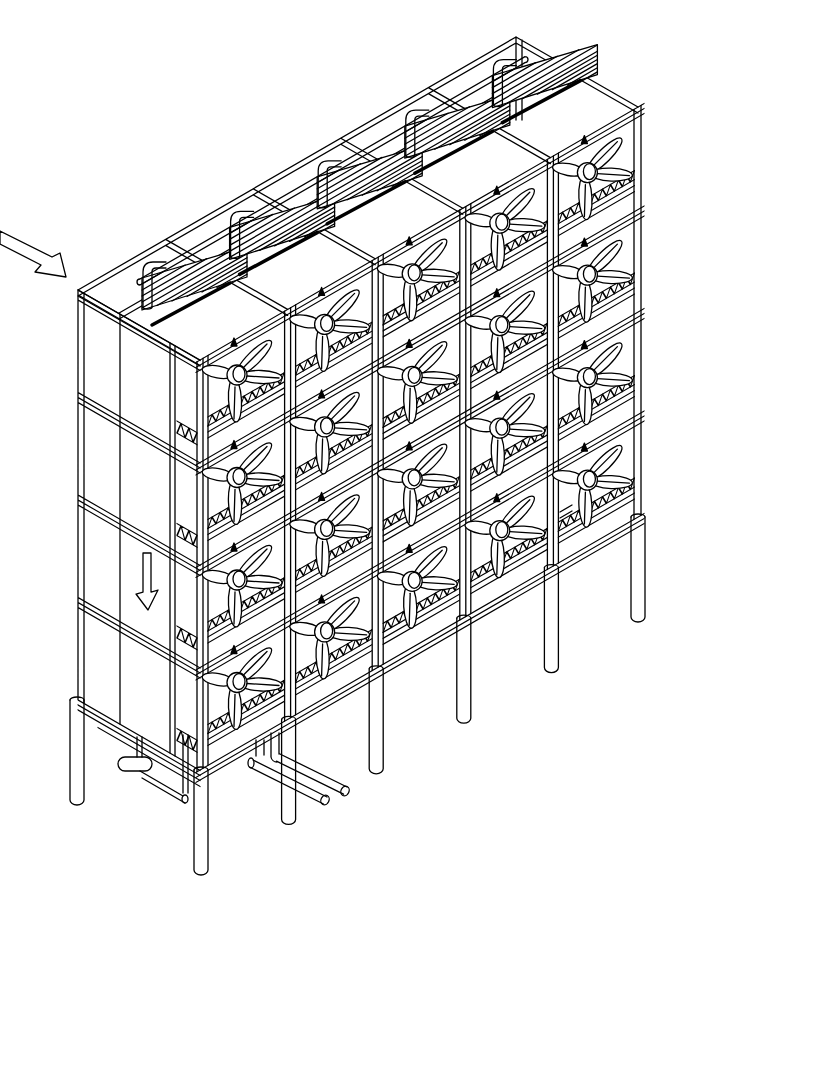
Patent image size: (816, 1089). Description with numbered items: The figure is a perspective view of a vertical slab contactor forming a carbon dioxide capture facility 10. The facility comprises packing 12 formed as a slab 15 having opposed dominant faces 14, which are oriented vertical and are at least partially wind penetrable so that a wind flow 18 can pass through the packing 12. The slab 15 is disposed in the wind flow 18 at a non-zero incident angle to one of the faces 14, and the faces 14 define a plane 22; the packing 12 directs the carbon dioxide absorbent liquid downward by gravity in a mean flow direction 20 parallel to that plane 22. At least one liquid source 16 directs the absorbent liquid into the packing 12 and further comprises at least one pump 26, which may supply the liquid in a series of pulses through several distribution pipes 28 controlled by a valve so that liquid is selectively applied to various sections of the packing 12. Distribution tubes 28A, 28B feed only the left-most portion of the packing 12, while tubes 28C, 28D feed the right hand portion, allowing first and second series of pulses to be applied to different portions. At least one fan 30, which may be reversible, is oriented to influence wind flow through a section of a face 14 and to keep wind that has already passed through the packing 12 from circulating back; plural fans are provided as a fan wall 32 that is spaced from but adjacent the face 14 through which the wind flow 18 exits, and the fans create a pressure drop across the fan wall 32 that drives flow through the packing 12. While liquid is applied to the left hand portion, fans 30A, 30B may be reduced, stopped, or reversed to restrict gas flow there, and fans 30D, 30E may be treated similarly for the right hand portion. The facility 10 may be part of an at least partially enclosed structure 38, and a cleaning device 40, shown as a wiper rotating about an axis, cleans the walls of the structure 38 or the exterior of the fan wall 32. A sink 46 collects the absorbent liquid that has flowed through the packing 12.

The carbon dioxide capture facility 10 is at (90, 44).
The packing 12 is at (130, 638).
The opposed dominant faces 14 is at (120, 338).
The slab 15 is at (177, 467).
The liquid source 16 is at (328, 801).
The wind flow 18 is at (3, 231).
The mean flow direction 20 is at (133, 585).
The plane 22 is at (183, 680).
The pump 26 is at (112, 772).
The distribution pipes 28 is at (512, 66).
The distribution tube 28A is at (165, 266).
The distribution tube 28B is at (258, 214).
The distribution tube 28C is at (340, 162).
The distribution tube 28D is at (443, 112).
The fan 30 is at (600, 480).
The fan 30A is at (202, 682).
The fan 30B is at (228, 382).
The fan 30D is at (637, 508).
The fan 30E is at (617, 166).
The fan wall 32 is at (626, 272).
The at least partially enclosed structure 38 is at (642, 222).
The cleaning device 40 is at (140, 510).
The sink 46 is at (566, 520).